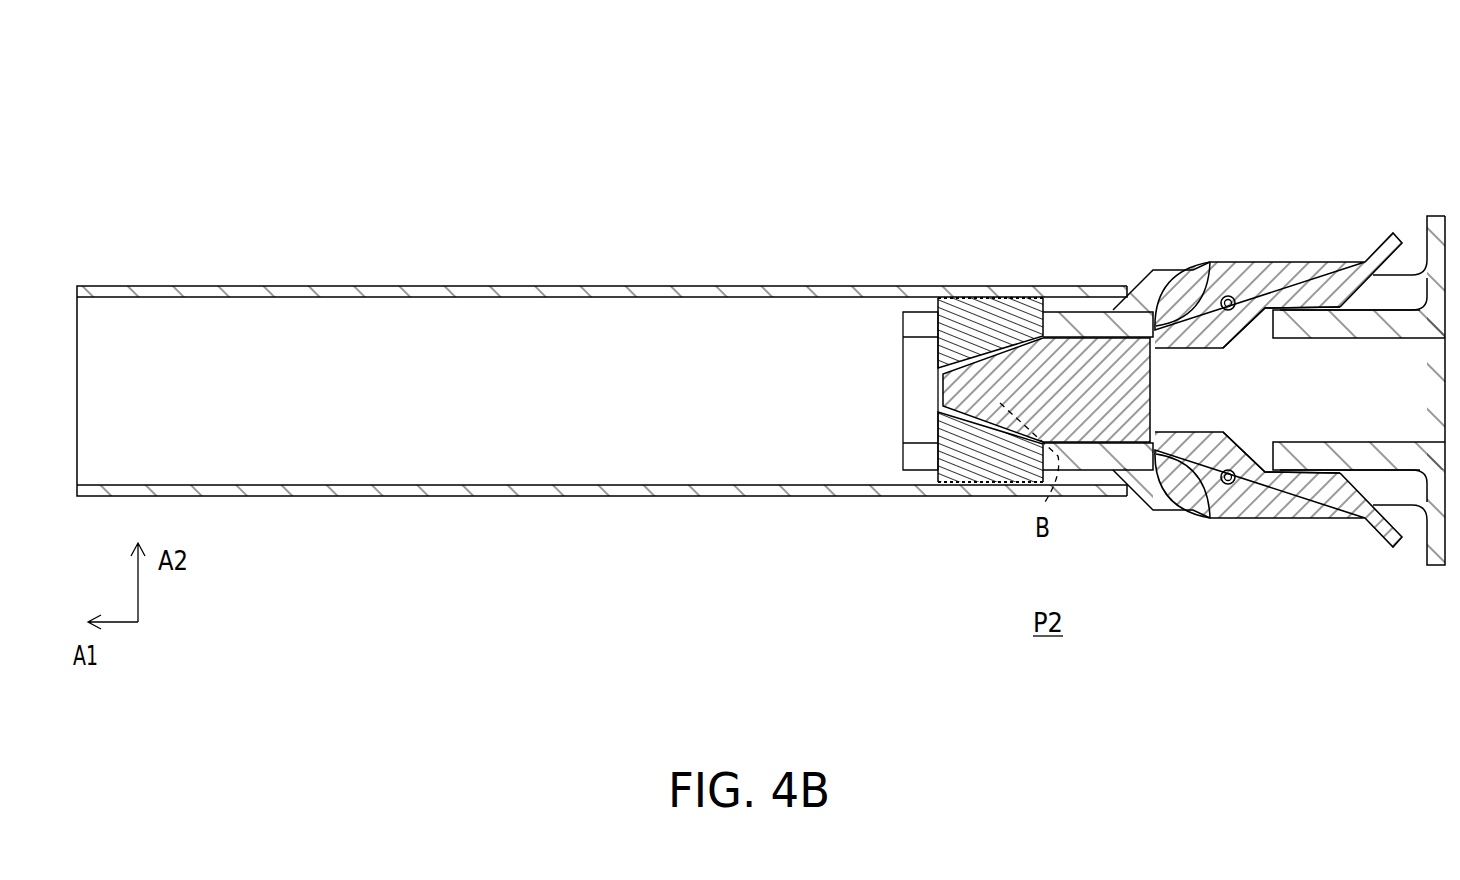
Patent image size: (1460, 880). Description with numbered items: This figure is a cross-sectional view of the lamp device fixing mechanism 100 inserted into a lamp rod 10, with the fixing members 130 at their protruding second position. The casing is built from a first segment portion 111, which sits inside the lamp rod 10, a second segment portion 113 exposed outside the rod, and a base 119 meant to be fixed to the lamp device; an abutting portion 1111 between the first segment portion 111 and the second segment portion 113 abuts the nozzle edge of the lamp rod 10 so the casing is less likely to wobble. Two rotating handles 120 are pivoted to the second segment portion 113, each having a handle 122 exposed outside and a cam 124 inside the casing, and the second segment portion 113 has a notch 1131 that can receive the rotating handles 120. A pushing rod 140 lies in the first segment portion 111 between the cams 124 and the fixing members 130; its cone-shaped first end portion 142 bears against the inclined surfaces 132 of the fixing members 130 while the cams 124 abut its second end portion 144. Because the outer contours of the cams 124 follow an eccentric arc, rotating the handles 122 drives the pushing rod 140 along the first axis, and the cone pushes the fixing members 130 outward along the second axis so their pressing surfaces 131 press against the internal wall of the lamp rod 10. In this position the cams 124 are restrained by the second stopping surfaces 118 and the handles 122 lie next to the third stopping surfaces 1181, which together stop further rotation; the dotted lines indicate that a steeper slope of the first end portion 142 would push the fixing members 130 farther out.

The lamp rod 10 is at (556, 287).
The lamp device fixing mechanism 100 is at (1199, 89).
The first segment portion 111 is at (1126, 374).
The abutting portion 1111 is at (1138, 292).
The second segment portion 113 is at (1133, 488).
The second stopping surface 118 is at (1261, 394).
The third stopping surface 1181 is at (1404, 300).
The base 119 is at (1362, 381).
The rotating handle 120 is at (1272, 290).
The handle 122 is at (1379, 284).
The cam 124 is at (1160, 300).
The fixing member 130 is at (952, 321).
The pressing surface 131 is at (962, 285).
The inclined surface 132 is at (979, 404).
The pushing rod 140 is at (1046, 321).
The first end portion 142 is at (1012, 350).
The second end portion 144 is at (1130, 393).
The notch 1131 is at (1373, 275).